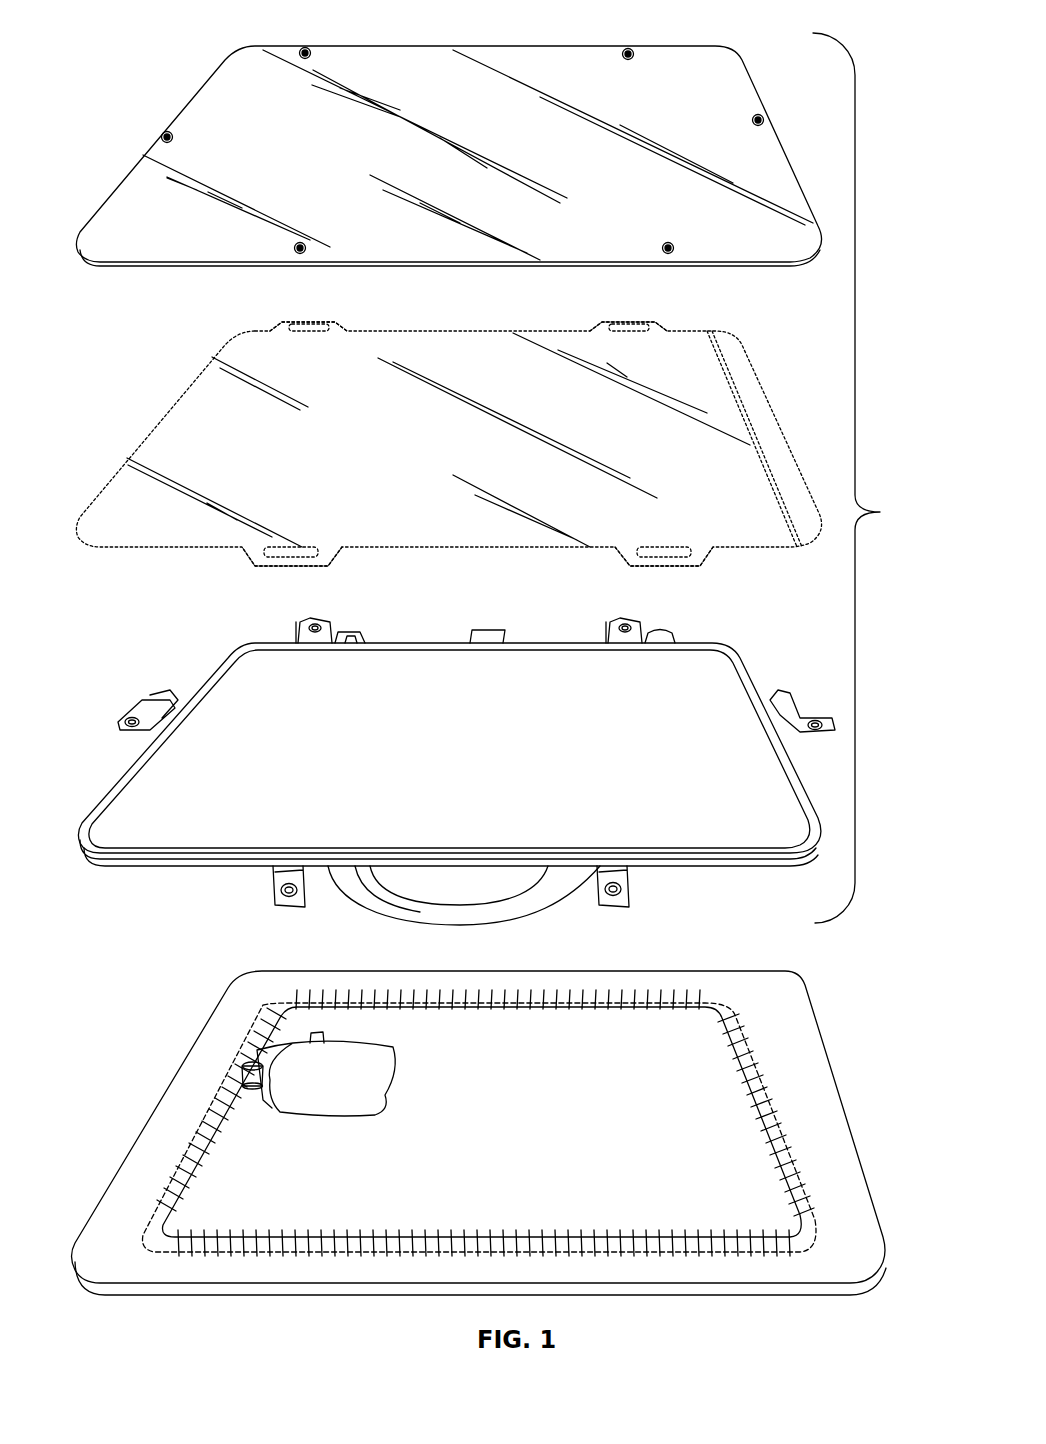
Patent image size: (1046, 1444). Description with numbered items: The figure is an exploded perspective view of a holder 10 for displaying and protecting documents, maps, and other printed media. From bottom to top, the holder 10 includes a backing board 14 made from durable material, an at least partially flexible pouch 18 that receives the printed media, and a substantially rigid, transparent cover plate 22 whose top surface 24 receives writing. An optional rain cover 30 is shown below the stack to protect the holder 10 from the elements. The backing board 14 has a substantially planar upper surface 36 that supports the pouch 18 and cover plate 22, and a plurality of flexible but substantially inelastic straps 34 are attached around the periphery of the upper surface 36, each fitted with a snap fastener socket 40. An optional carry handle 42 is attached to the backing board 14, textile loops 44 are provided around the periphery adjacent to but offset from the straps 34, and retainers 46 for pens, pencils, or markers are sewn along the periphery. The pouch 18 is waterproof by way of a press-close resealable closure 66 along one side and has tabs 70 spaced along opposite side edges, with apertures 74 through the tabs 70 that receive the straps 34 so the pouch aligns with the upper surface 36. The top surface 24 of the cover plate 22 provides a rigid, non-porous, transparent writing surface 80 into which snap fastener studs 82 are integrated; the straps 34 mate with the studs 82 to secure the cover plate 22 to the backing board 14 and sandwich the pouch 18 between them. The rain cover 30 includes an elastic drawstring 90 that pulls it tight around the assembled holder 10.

The holder 10 is at (869, 478).
The backing board 14 is at (459, 771).
The pouch 18 is at (448, 440).
The cover plate 22 is at (448, 153).
The top surface 24 is at (448, 137).
The cover 30 is at (479, 1124).
The straps 34 is at (320, 626).
The upper surface 36 is at (486, 752).
The snap fastener sockets 40 is at (621, 893).
The carry handle 42 is at (518, 921).
The textile loops 44 is at (665, 633).
The retainers 46 is at (788, 706).
The resealable closure 66 is at (724, 357).
The tabs 70 is at (282, 329).
The apertures 74 is at (600, 327).
The writing surface 80 is at (486, 192).
The snap fastener studs 82 is at (303, 50).
The elastic drawstring 90 is at (243, 975).